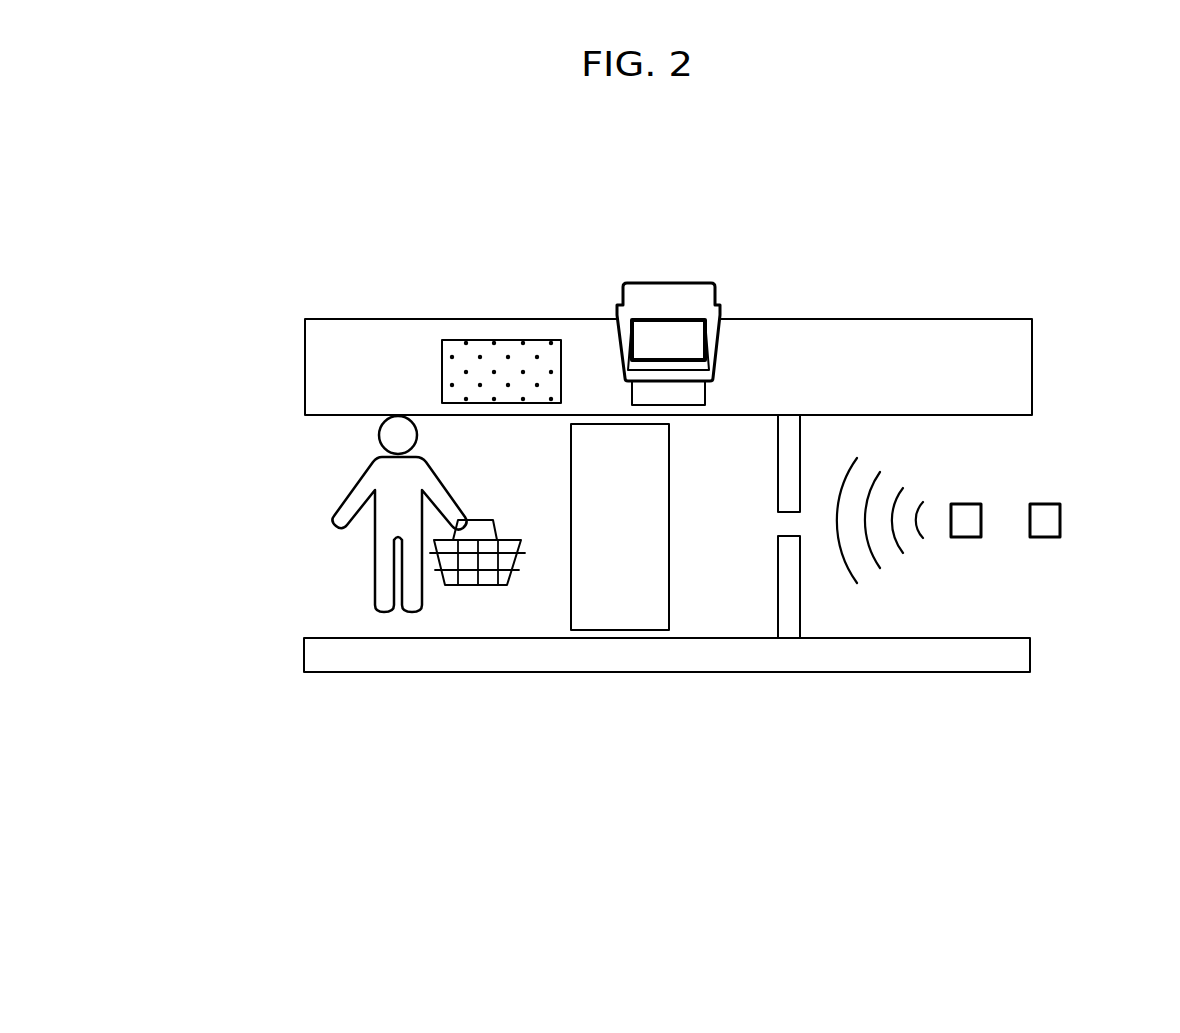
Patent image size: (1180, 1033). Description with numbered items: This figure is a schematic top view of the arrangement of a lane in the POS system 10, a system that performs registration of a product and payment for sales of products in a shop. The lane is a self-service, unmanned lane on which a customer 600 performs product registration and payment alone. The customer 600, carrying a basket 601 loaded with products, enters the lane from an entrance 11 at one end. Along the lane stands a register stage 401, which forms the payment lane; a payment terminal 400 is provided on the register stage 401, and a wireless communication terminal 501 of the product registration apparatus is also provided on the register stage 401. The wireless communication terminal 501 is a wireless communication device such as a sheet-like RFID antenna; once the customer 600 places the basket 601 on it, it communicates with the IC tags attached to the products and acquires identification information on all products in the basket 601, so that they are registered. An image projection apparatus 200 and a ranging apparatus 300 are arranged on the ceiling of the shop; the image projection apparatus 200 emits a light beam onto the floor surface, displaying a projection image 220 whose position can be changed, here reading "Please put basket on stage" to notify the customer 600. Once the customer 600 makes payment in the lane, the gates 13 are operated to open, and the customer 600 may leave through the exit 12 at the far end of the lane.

The POS system 10 is at (952, 249).
The entrance 11 is at (280, 586).
The exit 12 is at (1051, 609).
The gates 13 is at (801, 438).
The image projection apparatus 200 is at (1047, 503).
The projection image 220 is at (620, 630).
The ranging apparatus 300 is at (965, 503).
The payment terminal 400 is at (667, 281).
The register stage 401 is at (1008, 343).
The wireless communication terminal 501 is at (503, 340).
The customer 600 is at (363, 486).
The basket 601 is at (478, 518).